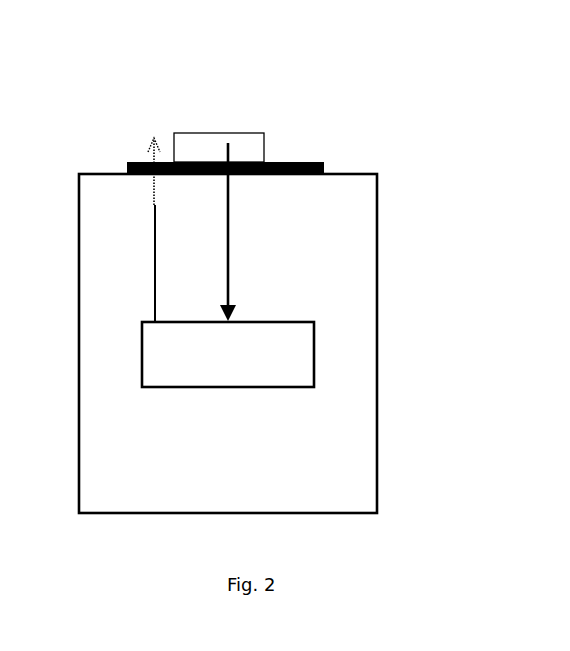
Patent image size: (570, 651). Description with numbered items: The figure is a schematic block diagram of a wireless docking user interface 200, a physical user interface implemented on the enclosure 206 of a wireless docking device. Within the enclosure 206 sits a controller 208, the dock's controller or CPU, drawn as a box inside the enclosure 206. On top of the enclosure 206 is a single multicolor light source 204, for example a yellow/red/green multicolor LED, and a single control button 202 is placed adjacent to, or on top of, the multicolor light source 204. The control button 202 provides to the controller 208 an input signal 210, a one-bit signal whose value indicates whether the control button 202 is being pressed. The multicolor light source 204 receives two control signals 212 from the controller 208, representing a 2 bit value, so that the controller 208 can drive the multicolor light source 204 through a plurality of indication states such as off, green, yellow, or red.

The wireless docking user interface 200 is at (474, 113).
The control button 202 is at (215, 133).
The multicolor light source 204 is at (130, 162).
The enclosure 206 is at (375, 436).
The controller 208 is at (242, 387).
The input signal 210 is at (228, 254).
The control signals 212 is at (153, 258).
The bit count of control signals 2 is at (142, 201).